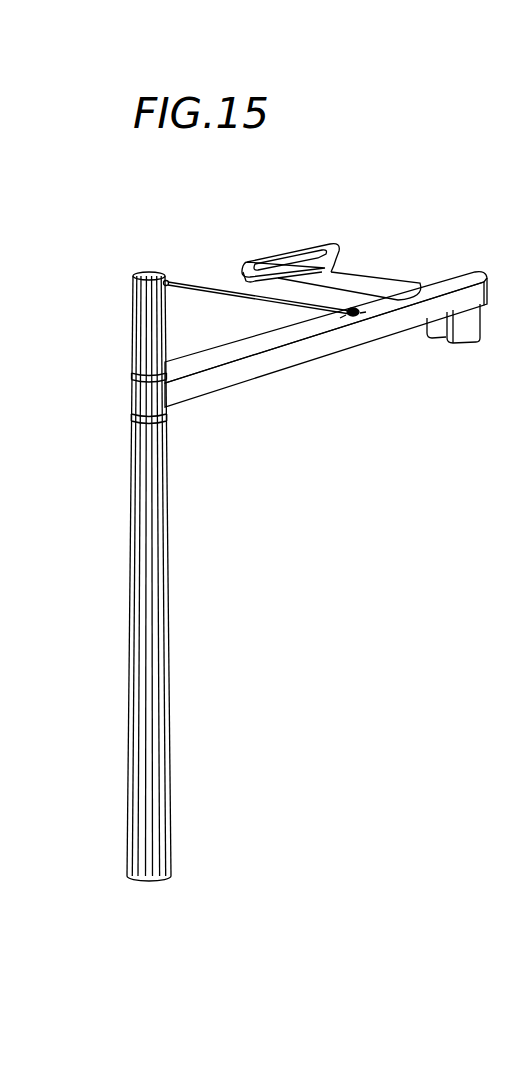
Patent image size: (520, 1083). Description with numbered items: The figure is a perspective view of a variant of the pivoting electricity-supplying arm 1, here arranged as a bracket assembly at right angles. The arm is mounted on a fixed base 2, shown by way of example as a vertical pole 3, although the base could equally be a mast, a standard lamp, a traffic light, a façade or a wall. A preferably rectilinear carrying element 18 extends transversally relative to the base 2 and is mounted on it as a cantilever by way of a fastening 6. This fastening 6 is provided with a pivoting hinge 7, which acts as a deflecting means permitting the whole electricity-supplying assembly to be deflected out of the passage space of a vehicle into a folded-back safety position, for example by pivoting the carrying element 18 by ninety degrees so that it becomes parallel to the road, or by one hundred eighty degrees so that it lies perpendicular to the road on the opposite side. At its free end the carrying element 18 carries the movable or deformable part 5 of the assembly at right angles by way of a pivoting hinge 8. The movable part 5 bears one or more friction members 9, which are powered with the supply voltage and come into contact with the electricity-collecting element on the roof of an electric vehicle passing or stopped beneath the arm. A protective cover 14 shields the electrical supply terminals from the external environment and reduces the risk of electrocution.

The pivoting electricity-supplying arm 1 is at (360, 203).
The base 2 is at (221, 576).
The pole 3 is at (196, 750).
The movable or deformable part 5 is at (361, 259).
The fastening 6 is at (178, 421).
The pivoting hinge 7 is at (178, 410).
The pivoting hinge 8 is at (486, 316).
The friction members 9 is at (248, 287).
The protective cover 14 is at (398, 288).
The carrying element 18 is at (295, 372).